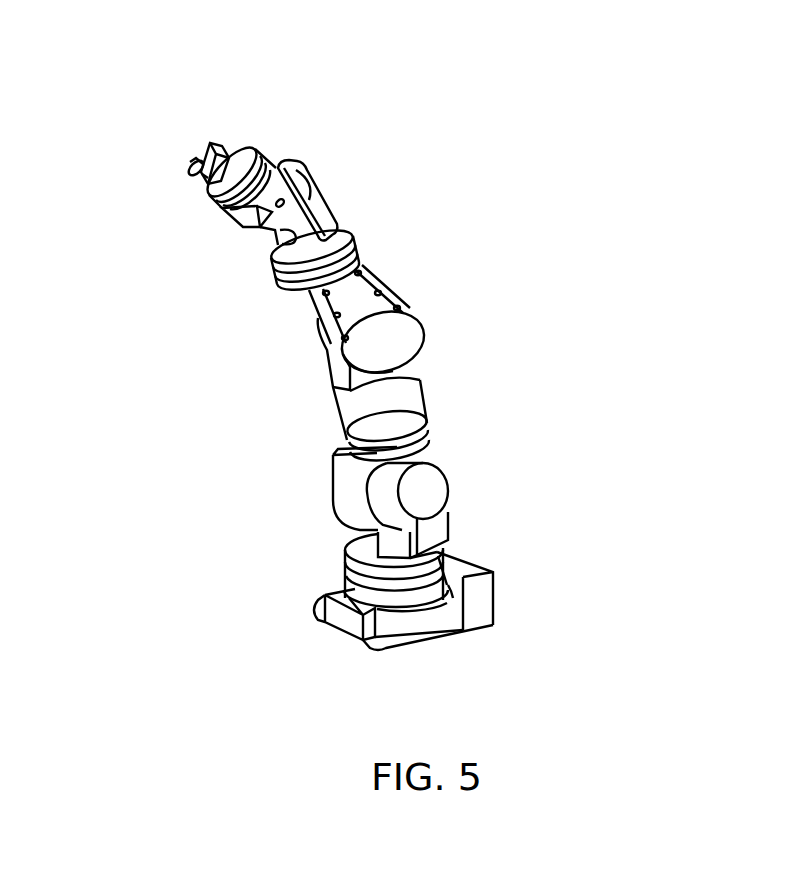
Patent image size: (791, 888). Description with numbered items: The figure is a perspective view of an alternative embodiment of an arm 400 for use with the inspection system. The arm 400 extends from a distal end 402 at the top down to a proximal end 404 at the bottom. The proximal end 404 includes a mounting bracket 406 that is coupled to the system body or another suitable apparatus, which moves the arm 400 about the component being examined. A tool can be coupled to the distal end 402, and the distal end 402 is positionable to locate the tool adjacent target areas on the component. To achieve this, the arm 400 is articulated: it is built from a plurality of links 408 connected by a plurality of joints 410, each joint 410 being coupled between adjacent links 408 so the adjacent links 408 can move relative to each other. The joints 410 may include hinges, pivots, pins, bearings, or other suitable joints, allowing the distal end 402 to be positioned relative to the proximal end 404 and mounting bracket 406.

The arm 400 is at (329, 61).
The distal end 402 is at (177, 163).
The proximal end 404 is at (318, 581).
The mounting bracket 406 is at (383, 648).
The links 408 is at (303, 188).
The joints 410 is at (340, 338).